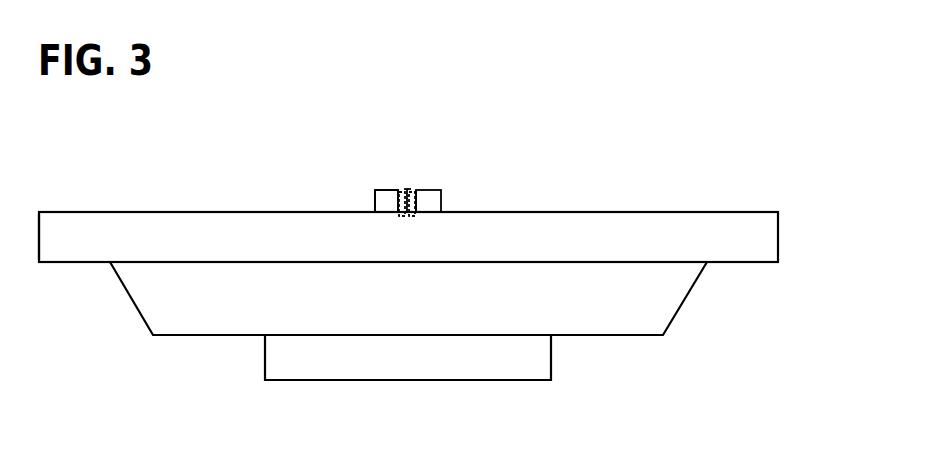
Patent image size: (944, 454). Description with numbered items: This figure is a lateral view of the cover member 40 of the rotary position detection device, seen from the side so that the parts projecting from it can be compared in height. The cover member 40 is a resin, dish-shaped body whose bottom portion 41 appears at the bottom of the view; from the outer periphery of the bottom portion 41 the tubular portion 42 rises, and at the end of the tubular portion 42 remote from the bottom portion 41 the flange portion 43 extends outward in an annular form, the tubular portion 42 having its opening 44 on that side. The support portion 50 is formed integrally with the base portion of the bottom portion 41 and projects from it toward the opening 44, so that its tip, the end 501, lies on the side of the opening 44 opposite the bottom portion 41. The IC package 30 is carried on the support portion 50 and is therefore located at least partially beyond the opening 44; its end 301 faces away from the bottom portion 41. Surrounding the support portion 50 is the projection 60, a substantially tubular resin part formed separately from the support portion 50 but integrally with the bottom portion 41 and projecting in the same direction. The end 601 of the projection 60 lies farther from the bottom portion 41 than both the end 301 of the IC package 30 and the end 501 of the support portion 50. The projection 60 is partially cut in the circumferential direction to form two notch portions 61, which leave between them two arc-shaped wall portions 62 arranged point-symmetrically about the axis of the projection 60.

The IC package 30 is at (403, 216).
The IC package end 301 is at (401, 191).
The cover member 40 is at (165, 214).
The bottom portion 41 is at (393, 370).
The tubular portion 42 is at (136, 302).
The flange portion 43 is at (50, 214).
The opening 44 is at (243, 212).
The support portion 50 is at (407, 190).
The end of support portion 501 is at (411, 190).
The projection 60 is at (383, 191).
The projection end 601 is at (397, 191).
The notch portion 61 is at (417, 214).
The wall portion 62 is at (378, 197).